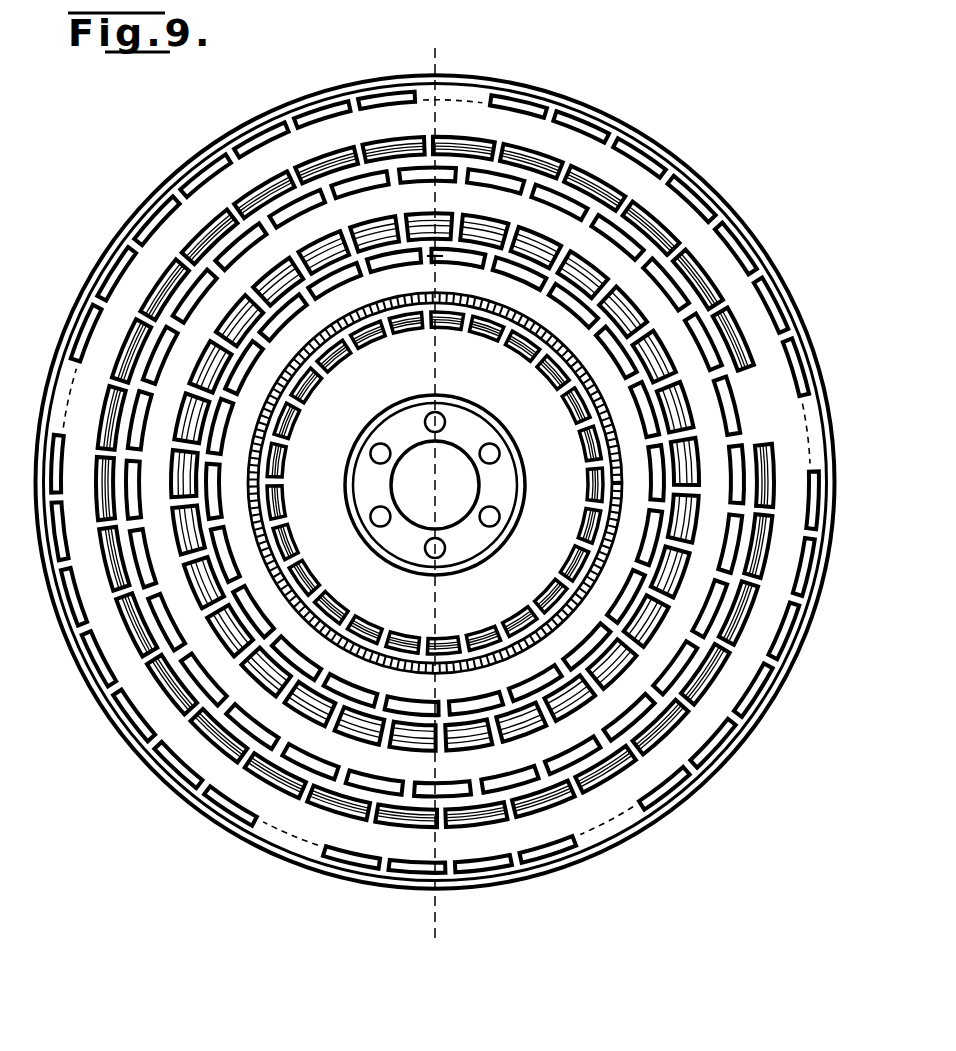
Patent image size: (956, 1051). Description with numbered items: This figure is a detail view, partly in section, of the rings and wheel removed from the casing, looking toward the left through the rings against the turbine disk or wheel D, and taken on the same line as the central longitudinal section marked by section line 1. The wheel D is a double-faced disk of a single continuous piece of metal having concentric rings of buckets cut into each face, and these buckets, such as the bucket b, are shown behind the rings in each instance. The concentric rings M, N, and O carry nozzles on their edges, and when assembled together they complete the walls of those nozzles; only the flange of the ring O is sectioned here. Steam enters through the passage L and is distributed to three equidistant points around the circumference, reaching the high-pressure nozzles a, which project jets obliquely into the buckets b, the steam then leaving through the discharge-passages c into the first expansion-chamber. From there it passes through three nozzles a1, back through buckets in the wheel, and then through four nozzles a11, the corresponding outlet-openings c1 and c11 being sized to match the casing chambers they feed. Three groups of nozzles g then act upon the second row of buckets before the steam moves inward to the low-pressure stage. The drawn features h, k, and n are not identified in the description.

The section line 1 is at (433, 497).
The turbine disk or wheel D is at (247, 98).
The ring M is at (230, 178).
The high-pressure nozzle-passage a is at (570, 112).
The nozzle-passage a1 is at (392, 97).
The nozzle-passage a11 is at (695, 178).
The bucket b is at (468, 137).
The discharge-passage c is at (518, 152).
The outlet-opening c1 is at (330, 158).
The outlet-opening c11 is at (141, 298).
The nozzle g is at (174, 348).
The laminated ring segment h is at (190, 380).
The inner ring segment k is at (262, 296).
The gap between segments n is at (436, 706).
The ring N is at (265, 290).
The steam supply passage L is at (473, 628).
The ring O is at (415, 293).